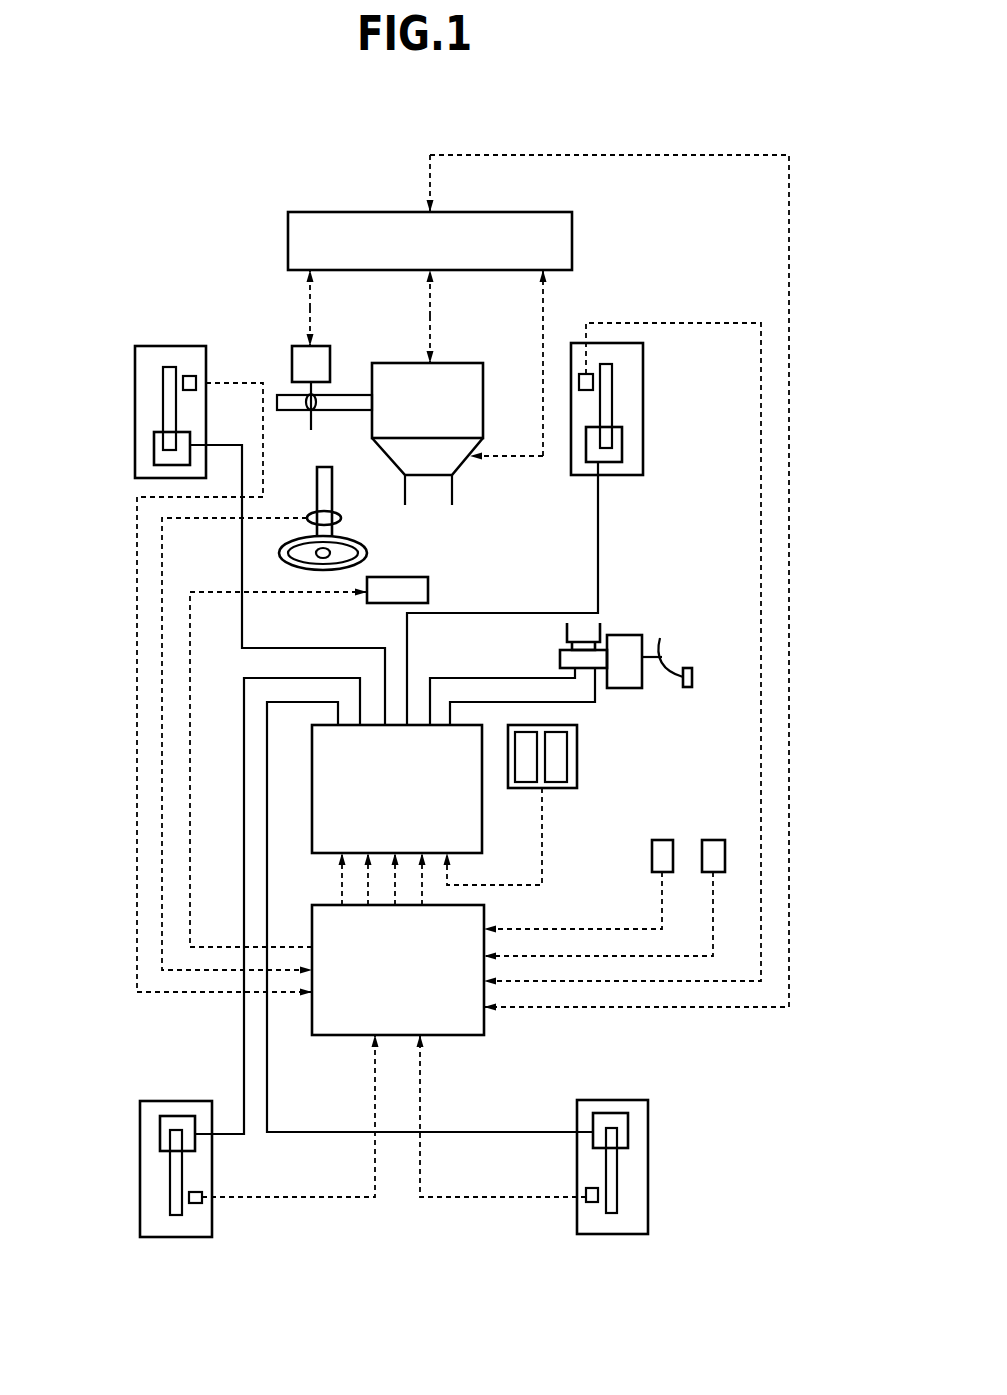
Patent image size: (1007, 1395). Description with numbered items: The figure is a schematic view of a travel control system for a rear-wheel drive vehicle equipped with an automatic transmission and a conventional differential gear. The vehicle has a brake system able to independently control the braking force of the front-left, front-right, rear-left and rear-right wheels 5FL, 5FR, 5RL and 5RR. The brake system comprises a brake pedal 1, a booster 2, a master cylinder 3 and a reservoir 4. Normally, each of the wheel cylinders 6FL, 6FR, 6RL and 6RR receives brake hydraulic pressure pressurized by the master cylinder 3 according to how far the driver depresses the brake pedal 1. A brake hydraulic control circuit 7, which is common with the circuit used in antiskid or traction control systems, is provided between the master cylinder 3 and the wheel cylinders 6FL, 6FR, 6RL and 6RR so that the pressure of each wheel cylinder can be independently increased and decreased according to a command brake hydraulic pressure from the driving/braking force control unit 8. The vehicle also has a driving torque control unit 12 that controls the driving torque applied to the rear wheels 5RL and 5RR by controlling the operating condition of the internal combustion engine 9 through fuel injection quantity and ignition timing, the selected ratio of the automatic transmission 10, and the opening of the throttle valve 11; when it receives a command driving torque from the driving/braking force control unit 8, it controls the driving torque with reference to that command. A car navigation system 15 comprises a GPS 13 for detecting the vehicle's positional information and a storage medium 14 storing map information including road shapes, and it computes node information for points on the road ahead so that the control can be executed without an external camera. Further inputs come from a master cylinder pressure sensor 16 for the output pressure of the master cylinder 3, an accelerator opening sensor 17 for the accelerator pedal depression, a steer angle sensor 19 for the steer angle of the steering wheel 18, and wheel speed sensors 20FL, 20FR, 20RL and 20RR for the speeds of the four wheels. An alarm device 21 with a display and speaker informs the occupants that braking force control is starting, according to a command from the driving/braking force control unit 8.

The brake pedal 1 is at (692, 677).
The booster 2 is at (632, 688).
The master cylinder 3 is at (560, 656).
The reservoir 4 is at (600, 630).
The front-left wheel 5FL is at (135, 382).
The front-right wheel 5FR is at (643, 383).
The rear-left wheel 5RL is at (140, 1207).
The rear-right wheel 5RR is at (648, 1198).
The front-left wheel cylinder 6FL is at (154, 450).
The front-right wheel cylinder 6FR is at (622, 447).
The rear-left wheel cylinder 6RL is at (160, 1130).
The rear-right wheel cylinder 6RR is at (630, 1130).
The brake hydraulic control circuit 7 is at (327, 853).
The driving/braking force control unit 8 is at (343, 1036).
The internal combustion engine 9 is at (398, 363).
The automatic transmission 10 is at (385, 465).
The throttle valve 11 is at (319, 416).
The driving torque control unit 12 is at (573, 234).
The GPS 13 is at (523, 788).
The storage medium 14 is at (558, 788).
The car navigation system 15 is at (583, 785).
The master cylinder pressure sensor 16 is at (662, 840).
The accelerator opening sensor 17 is at (713, 840).
The steering wheel 18 is at (367, 556).
The steer angle sensor 19 is at (342, 518).
The front-left wheel speed sensor 20FL is at (188, 376).
The front-right wheel speed sensor 20FR is at (579, 374).
The rear-left wheel speed sensor 20RL is at (196, 1203).
The rear-right wheel speed sensor 20RR is at (595, 1202).
The alarm device 21 is at (428, 585).